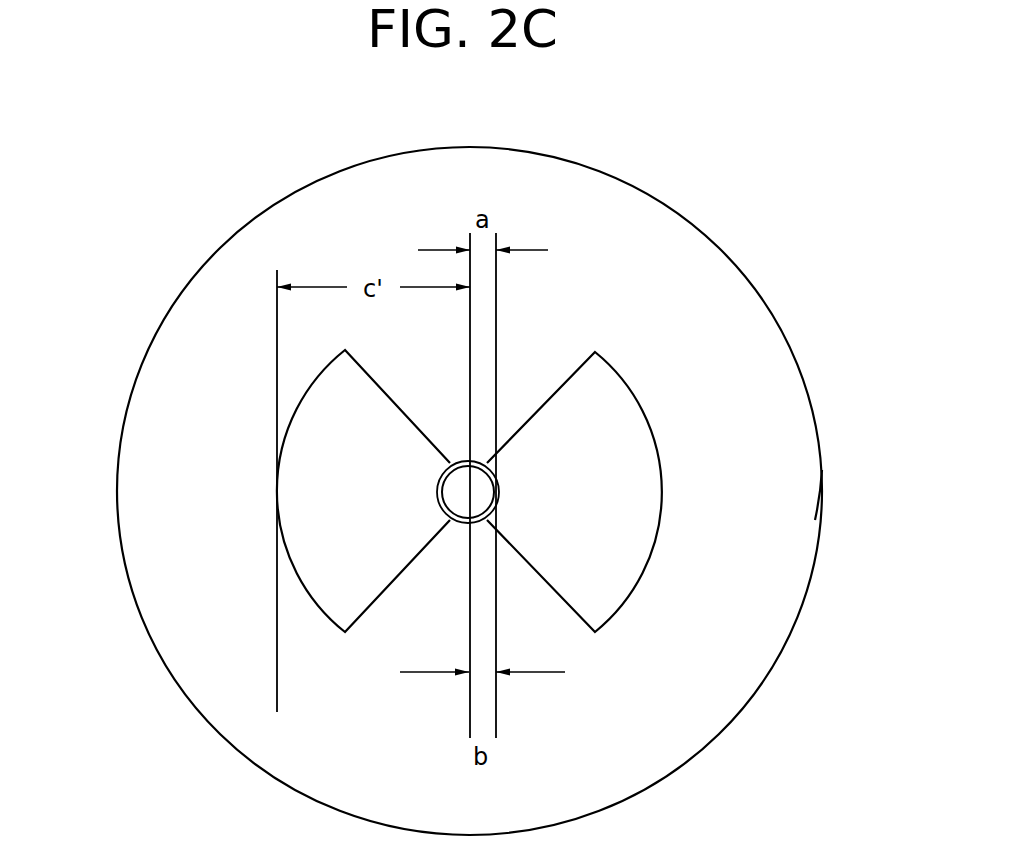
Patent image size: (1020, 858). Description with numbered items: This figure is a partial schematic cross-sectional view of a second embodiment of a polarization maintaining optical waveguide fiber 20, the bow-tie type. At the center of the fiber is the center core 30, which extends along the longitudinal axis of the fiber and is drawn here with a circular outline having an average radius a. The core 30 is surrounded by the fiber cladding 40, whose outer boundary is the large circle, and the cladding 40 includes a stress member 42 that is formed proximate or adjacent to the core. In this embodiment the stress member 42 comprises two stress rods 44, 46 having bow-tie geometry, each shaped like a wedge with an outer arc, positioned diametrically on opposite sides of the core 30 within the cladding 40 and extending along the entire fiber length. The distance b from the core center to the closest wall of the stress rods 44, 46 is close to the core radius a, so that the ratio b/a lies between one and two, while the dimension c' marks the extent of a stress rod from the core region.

The optical waveguide fiber 20 is at (766, 187).
The center core 30 is at (462, 523).
The fiber cladding 40 is at (793, 515).
The stress member 42 is at (379, 480).
The stress rod 44 is at (613, 388).
The stress rod 46 is at (295, 490).